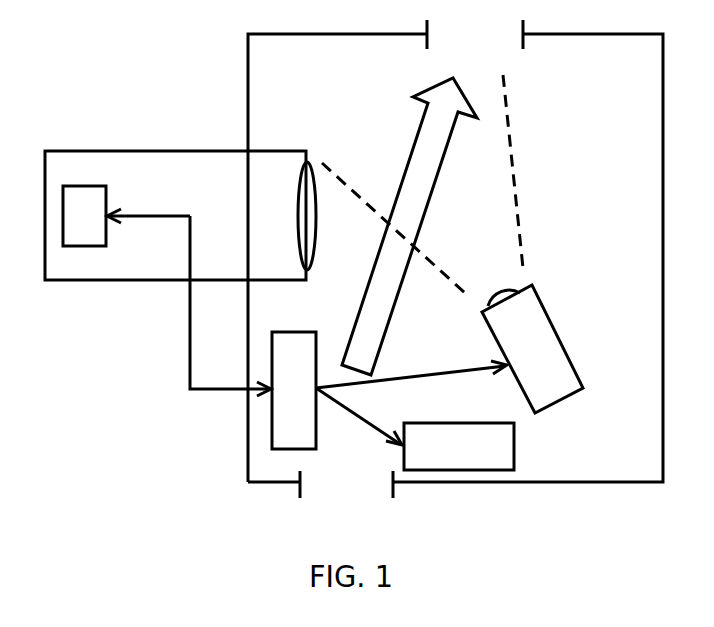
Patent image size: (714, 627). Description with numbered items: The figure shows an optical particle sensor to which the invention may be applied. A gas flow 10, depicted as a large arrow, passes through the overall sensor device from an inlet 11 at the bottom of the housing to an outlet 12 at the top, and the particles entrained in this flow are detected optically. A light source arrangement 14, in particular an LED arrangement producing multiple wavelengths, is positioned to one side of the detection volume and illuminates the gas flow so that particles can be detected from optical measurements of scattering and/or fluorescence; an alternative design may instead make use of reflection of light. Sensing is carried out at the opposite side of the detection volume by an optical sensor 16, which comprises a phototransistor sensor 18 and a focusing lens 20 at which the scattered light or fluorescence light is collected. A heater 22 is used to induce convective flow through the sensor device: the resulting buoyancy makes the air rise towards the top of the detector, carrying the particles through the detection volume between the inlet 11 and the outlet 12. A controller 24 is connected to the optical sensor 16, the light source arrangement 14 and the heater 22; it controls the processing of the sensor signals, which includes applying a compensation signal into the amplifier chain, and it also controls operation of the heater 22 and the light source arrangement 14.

The gas flow 10 is at (410, 160).
The inlet 11 is at (352, 498).
The outlet 12 is at (472, 45).
The light source arrangement 14 is at (555, 328).
The optical sensor 16 is at (86, 151).
The phototransistor sensor 18 is at (87, 246).
The focusing lens 20 is at (298, 211).
The heater 22 is at (514, 443).
The controller 24 is at (320, 359).